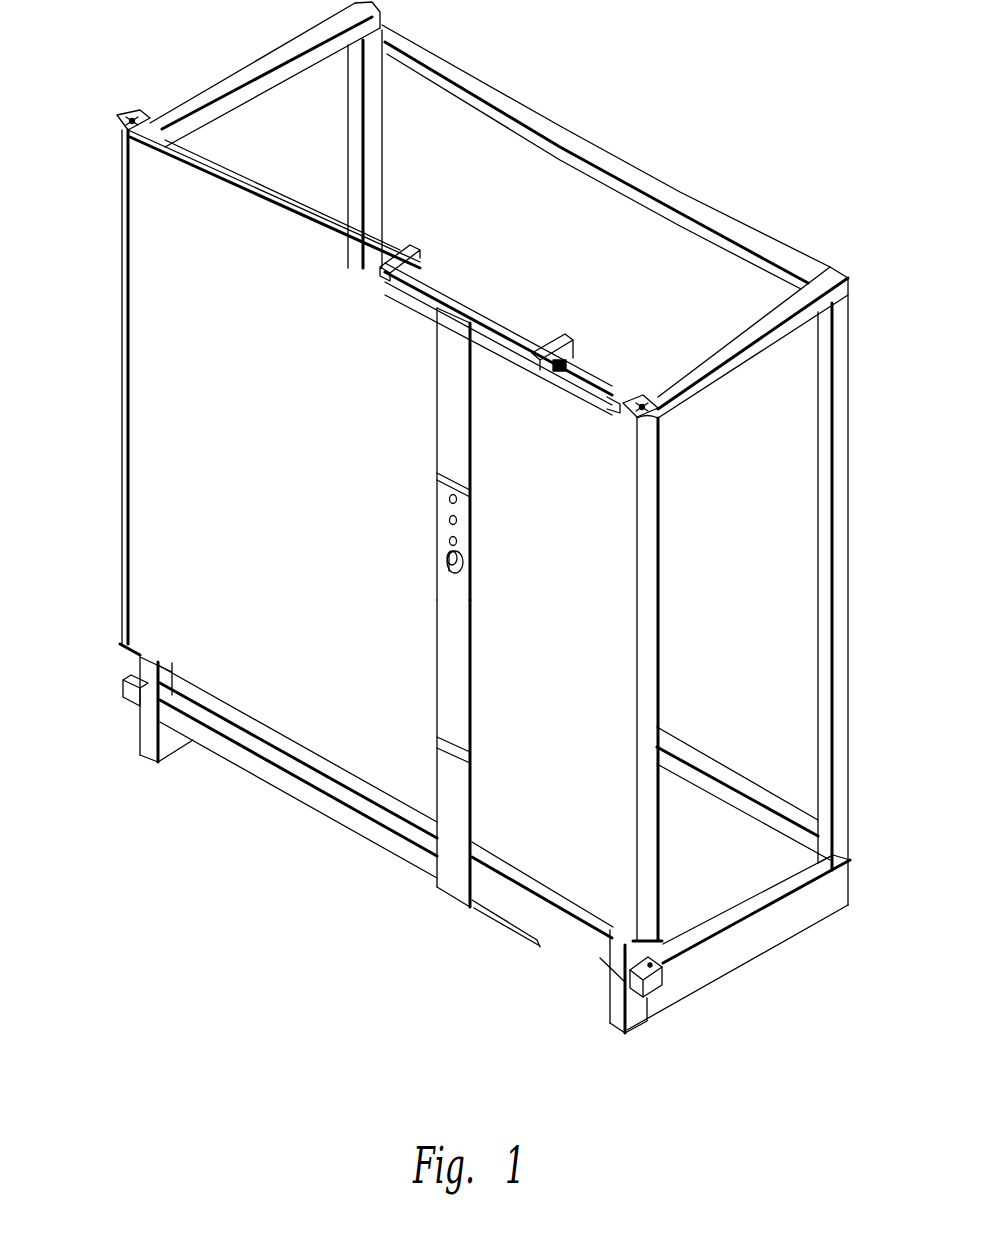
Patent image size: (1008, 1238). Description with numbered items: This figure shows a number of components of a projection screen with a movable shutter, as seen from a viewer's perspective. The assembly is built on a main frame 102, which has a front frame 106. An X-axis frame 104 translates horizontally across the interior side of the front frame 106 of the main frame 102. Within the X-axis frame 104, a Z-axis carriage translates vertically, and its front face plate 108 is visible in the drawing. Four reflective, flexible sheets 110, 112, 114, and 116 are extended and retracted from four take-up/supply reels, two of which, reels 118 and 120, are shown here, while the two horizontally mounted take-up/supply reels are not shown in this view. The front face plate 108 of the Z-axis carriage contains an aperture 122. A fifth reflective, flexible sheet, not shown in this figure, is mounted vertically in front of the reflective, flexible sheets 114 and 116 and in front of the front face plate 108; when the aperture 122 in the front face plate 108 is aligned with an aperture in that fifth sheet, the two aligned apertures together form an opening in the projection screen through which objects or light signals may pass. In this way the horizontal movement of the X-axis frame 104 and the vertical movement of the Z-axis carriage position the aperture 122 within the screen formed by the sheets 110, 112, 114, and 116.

The main frame 102 is at (848, 397).
The X-axis frame 104 is at (483, 297).
The front frame 106 is at (122, 328).
The front face plate 108 is at (452, 627).
The reflective, flexible sheet 110 is at (245, 222).
The reflective, flexible sheet 112 is at (617, 584).
The reflective, flexible sheet 114 is at (455, 437).
The reflective, flexible sheet 116 is at (455, 877).
The take-up/supply reel 118 is at (138, 110).
The take-up/supply reel 120 is at (637, 395).
The aperture 122 is at (447, 558).